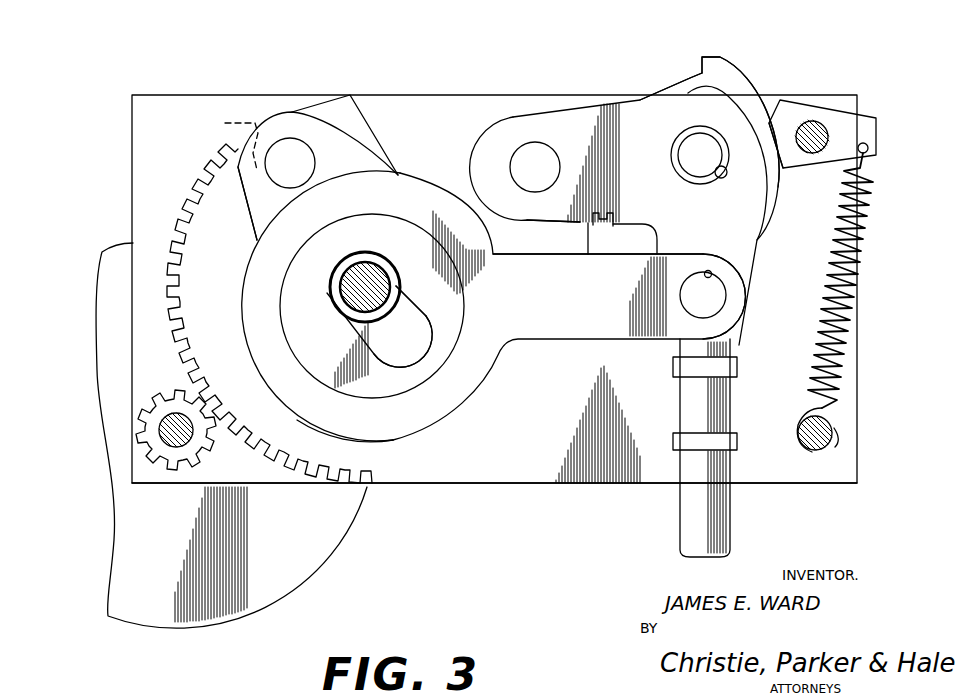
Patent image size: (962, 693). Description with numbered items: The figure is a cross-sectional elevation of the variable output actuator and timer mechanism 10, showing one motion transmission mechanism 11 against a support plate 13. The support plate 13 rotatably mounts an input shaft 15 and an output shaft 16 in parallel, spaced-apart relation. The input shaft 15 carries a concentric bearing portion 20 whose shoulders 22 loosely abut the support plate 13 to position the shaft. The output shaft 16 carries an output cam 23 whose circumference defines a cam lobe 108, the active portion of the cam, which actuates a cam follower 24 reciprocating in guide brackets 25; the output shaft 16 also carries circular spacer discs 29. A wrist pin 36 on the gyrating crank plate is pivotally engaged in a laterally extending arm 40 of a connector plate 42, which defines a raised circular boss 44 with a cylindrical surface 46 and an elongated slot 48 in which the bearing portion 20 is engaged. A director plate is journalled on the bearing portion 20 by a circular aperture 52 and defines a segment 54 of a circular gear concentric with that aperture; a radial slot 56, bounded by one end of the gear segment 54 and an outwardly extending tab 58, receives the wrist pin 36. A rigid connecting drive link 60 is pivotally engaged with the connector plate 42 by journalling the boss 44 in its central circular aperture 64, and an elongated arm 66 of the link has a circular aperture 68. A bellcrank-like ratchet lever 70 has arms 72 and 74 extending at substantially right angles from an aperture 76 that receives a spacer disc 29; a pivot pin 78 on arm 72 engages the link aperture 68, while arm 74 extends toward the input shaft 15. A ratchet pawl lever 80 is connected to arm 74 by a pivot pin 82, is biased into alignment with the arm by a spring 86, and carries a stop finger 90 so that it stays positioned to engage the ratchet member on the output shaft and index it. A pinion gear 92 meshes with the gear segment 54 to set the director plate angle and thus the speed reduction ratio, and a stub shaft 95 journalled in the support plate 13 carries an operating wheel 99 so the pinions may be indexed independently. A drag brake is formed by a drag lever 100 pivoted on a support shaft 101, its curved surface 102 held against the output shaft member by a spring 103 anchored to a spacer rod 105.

The variable output actuator and timer mechanism 10 is at (514, 72).
The motion transmission mechanism 11 is at (505, 404).
The support plate 13 is at (166, 137).
The input shaft 15 is at (375, 282).
The output shaft 16 is at (698, 143).
The bearing portion 20 is at (373, 327).
The shoulders 22 is at (423, 283).
The output cam 23 is at (701, 75).
The cam follower 24 is at (703, 510).
The guide brackets 25 is at (738, 366).
The spacer discs 29 is at (672, 148).
The wrist pin 36 is at (307, 170).
The laterally extending arm 40 is at (243, 183).
The connector plate 42 is at (241, 230).
The circular boss 44 is at (327, 350).
The cylindrical surface 46 is at (280, 312).
The elongated slot 48 is at (430, 320).
The circular aperture 52 is at (340, 258).
The gear segment 54 is at (300, 455).
The slot 56 is at (226, 140).
The tab 58 is at (350, 118).
The connecting drive link 60 is at (587, 352).
The central circular aperture 64 is at (382, 395).
The elongated arm 66 is at (418, 175).
The circular aperture 68 is at (708, 270).
The ratchet lever 70 is at (619, 96).
The arm 72 is at (735, 249).
The arm 74 is at (568, 115).
The aperture 76 is at (724, 178).
The pivot pin 78 is at (703, 302).
The ratchet pawl lever 80 is at (575, 226).
The pivot pin 82 is at (525, 160).
The spring 86 is at (596, 248).
The stop finger 90 is at (605, 212).
The pinion gear 92 is at (156, 400).
The stub shaft 95 is at (174, 442).
The operating wheel 99 is at (318, 550).
The drag lever 100 is at (813, 107).
The support shaft 101 is at (807, 154).
The curved surface 102 is at (776, 112).
The spring 103 is at (868, 212).
The spacer rod 105 is at (834, 440).
The cam lobe 108 is at (720, 63).